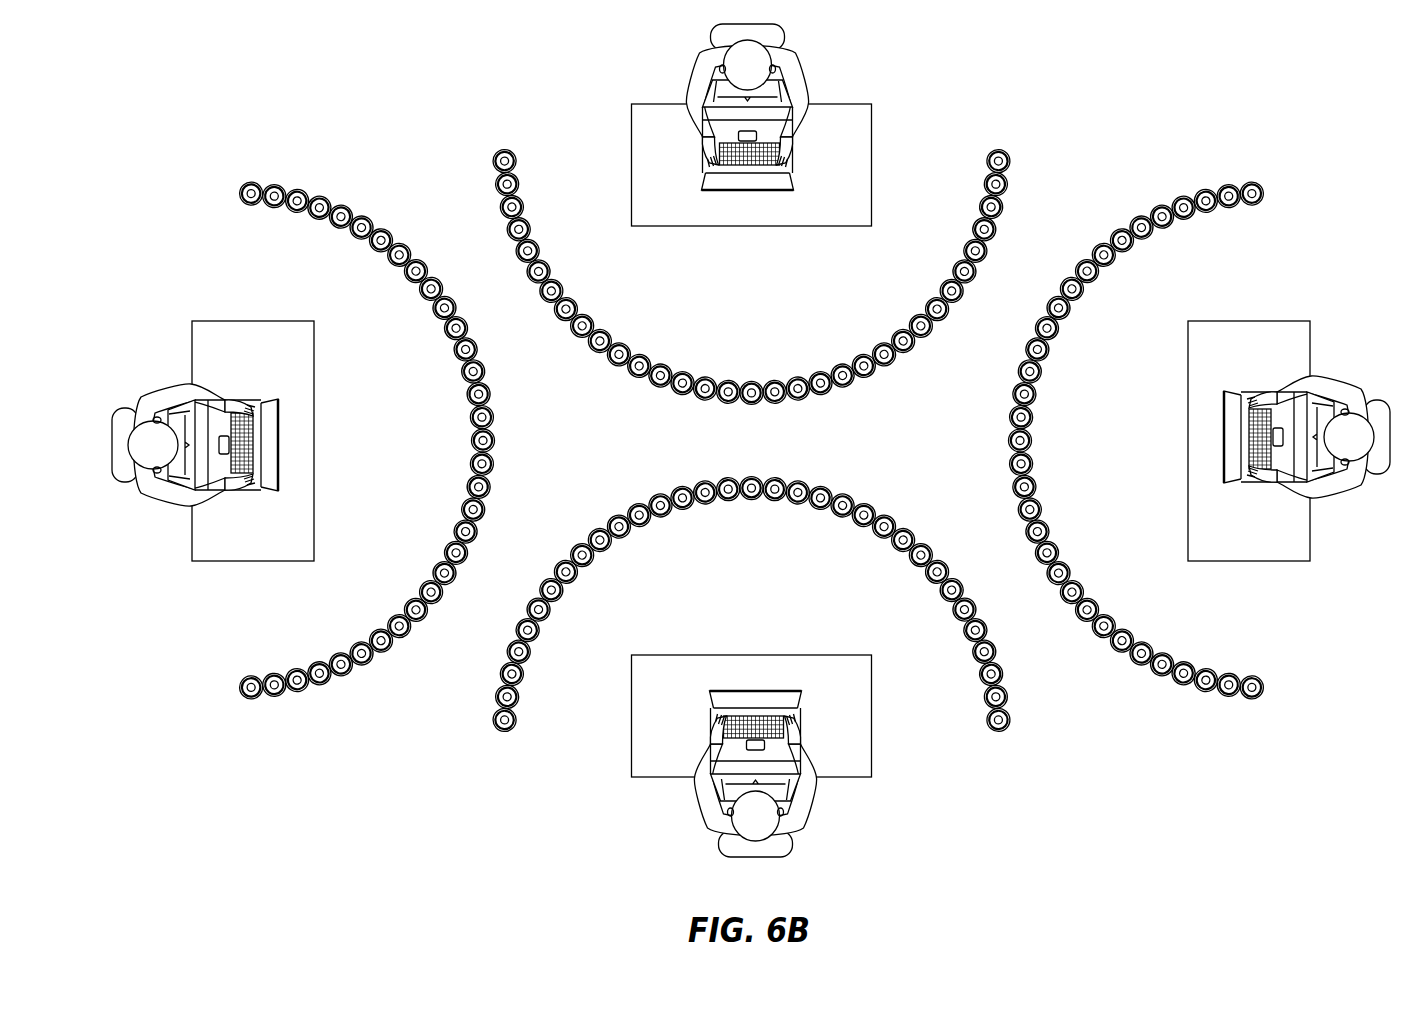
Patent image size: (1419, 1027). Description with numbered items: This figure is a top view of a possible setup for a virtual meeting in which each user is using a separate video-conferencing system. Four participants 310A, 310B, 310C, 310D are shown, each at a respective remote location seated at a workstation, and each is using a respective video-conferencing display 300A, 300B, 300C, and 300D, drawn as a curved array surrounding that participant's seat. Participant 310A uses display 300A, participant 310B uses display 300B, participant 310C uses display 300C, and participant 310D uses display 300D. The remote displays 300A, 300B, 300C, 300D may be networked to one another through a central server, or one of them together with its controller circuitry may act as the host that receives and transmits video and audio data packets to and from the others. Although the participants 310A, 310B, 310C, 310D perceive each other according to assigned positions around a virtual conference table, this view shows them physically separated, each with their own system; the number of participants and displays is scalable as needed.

The video-conferencing display 300A is at (673, 483).
The video-conferencing display 300B is at (830, 399).
The video-conferencing display 300C is at (356, 203).
The video-conferencing display 300D is at (1147, 203).
The participant 310A is at (780, 831).
The participant 310B is at (780, 51).
The participant 310C is at (141, 406).
The participant 310D is at (1362, 406).